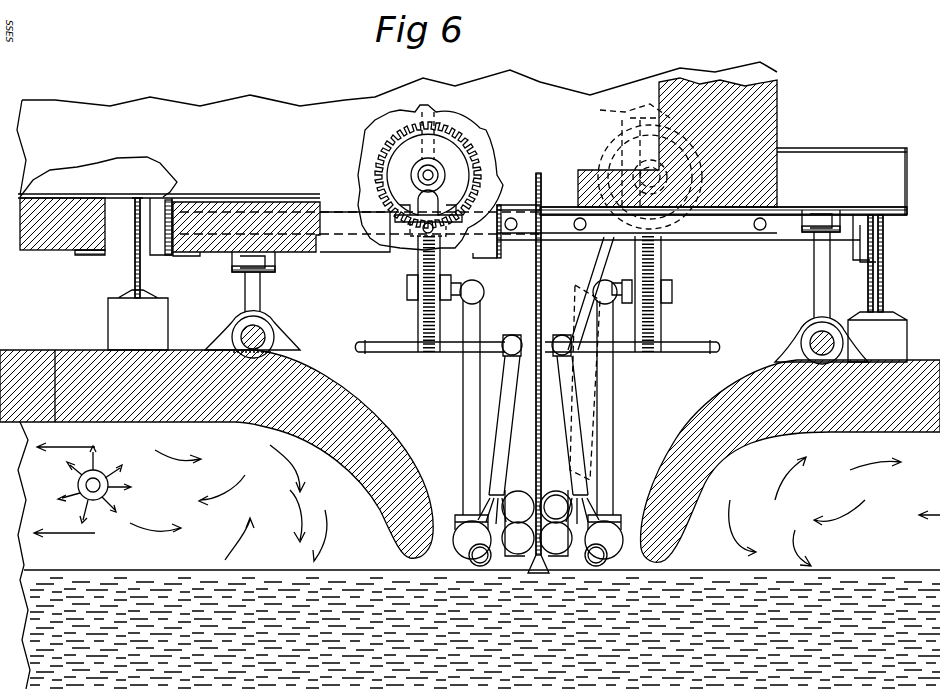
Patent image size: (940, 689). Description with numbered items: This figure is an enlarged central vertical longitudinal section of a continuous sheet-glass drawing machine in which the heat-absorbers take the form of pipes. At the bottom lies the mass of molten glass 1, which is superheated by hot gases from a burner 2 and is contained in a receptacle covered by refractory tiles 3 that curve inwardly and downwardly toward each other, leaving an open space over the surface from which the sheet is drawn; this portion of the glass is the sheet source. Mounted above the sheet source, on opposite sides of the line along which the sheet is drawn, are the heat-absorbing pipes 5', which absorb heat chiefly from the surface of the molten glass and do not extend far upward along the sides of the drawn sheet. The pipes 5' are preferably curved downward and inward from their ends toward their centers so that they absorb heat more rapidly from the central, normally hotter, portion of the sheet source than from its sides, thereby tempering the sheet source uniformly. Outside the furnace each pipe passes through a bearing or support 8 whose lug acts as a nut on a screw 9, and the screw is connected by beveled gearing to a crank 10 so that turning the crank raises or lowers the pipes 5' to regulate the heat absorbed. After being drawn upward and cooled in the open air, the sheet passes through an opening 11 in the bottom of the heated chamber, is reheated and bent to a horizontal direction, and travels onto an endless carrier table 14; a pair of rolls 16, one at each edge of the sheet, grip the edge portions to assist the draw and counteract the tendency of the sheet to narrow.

The mass of molten glass 1 is at (160, 582).
The burner 2 is at (102, 484).
The tile 3 is at (356, 462).
The pipe heat-absorber 5' is at (534, 543).
The bearing or support 8 is at (412, 172).
The screw 9 is at (470, 160).
The crank 10 is at (442, 116).
The opening 11 is at (511, 218).
The endless carrier table 14 is at (535, 280).
The roll 16 is at (512, 527).